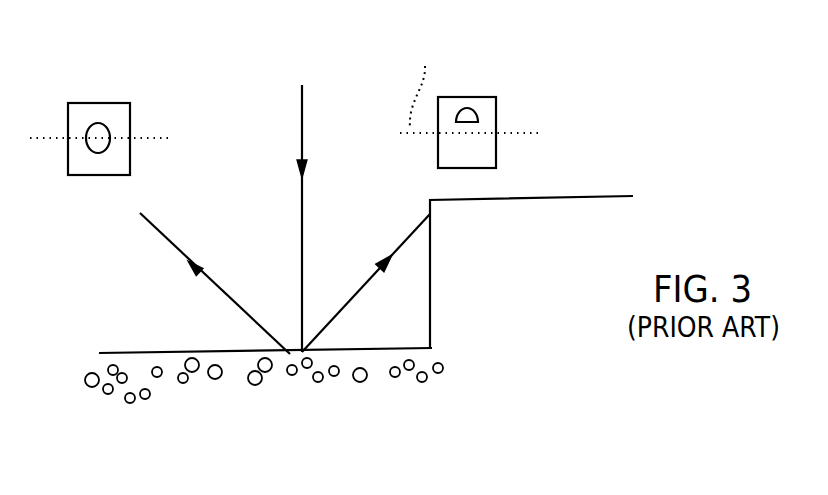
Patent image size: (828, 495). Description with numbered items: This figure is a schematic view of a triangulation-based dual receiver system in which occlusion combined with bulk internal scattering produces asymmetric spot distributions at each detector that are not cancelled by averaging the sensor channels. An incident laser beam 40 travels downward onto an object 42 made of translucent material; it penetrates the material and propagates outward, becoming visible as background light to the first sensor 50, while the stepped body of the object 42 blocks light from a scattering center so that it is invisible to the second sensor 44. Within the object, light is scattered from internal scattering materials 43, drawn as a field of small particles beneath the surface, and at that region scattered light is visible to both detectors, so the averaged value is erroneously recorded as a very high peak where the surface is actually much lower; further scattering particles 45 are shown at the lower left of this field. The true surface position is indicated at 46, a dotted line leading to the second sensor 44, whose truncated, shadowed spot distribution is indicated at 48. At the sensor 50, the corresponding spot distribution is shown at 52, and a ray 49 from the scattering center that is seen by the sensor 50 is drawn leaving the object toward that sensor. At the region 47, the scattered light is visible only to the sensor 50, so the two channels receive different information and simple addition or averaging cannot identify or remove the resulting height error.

The incident laser beam 40 is at (302, 122).
The object 42 is at (583, 196).
The internal scattering materials 43 is at (214, 365).
The second sensor 44 is at (474, 97).
The particles 45 is at (139, 404).
The true surface position 46 is at (426, 85).
The region 47 is at (441, 378).
The truncated (shadowed) spot distribution 48 is at (478, 116).
The ray 49 is at (228, 300).
The first sensor 50 is at (104, 103).
The spot distribution 52 is at (108, 126).